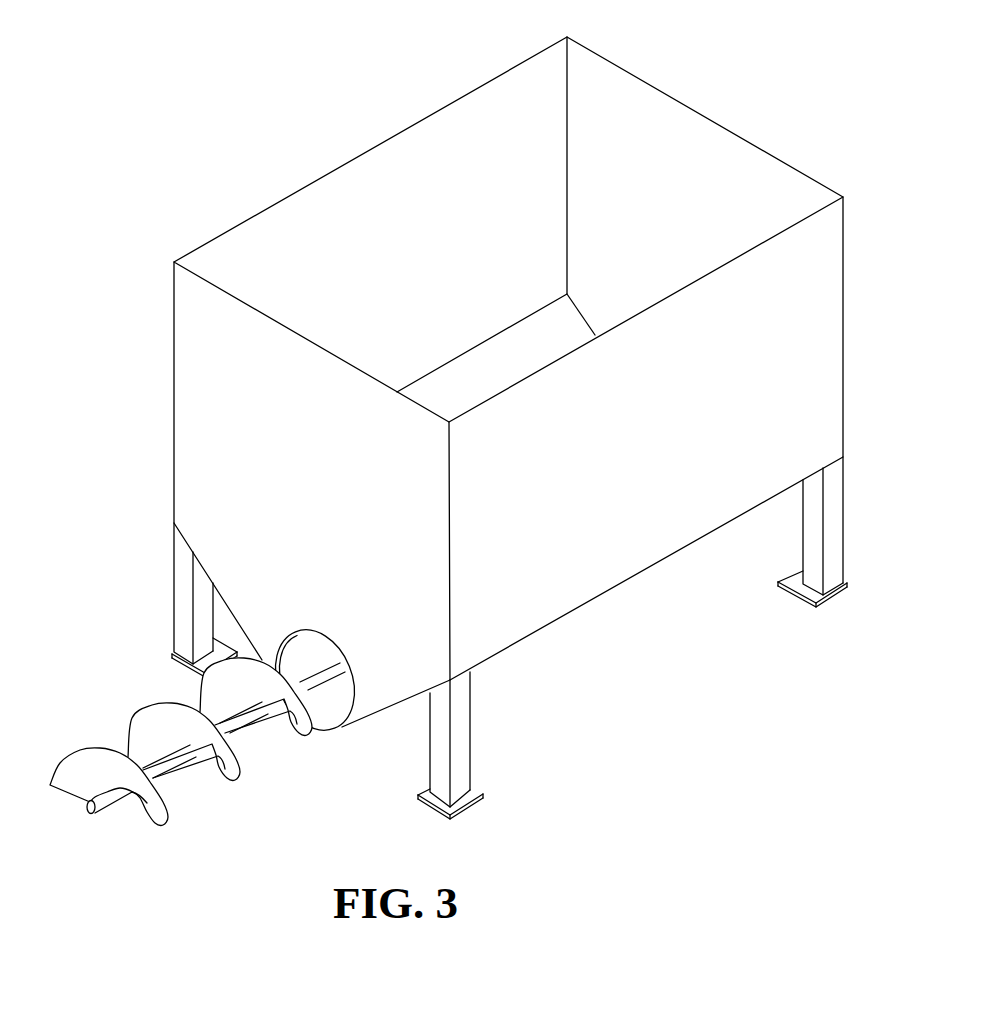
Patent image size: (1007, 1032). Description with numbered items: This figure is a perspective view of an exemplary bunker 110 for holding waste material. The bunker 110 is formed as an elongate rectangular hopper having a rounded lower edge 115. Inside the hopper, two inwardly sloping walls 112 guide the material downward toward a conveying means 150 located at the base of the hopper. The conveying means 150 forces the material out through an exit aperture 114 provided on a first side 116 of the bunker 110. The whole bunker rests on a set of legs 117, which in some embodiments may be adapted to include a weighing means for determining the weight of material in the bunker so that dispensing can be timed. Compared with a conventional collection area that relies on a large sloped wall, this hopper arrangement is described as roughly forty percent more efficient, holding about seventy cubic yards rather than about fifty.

The hopper assembly 110 is at (860, 151).
The inwardly sloping walls 112 is at (527, 347).
The exit aperture 114 is at (276, 636).
The rounded lower edge 115 is at (314, 744).
The first side 116 is at (218, 371).
The legs 117 is at (833, 525).
The conveying means 150 is at (232, 785).